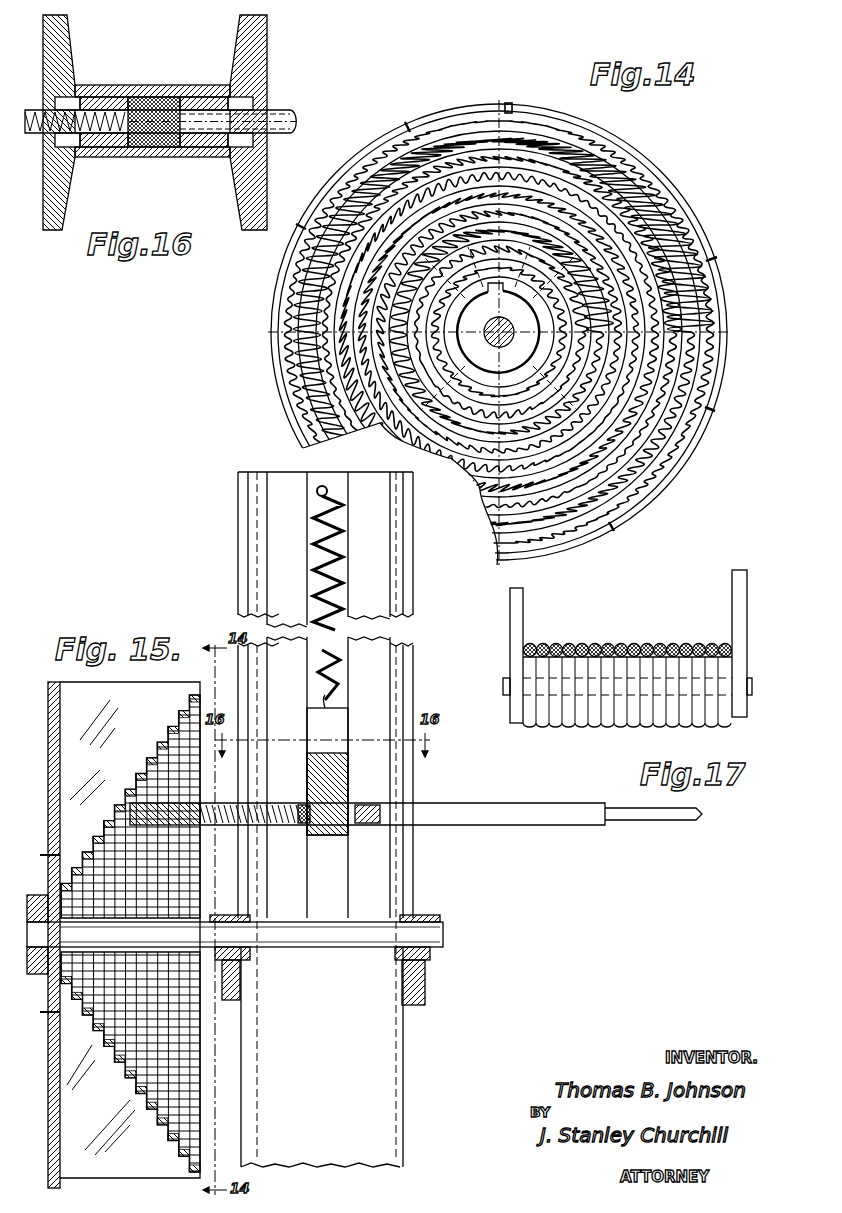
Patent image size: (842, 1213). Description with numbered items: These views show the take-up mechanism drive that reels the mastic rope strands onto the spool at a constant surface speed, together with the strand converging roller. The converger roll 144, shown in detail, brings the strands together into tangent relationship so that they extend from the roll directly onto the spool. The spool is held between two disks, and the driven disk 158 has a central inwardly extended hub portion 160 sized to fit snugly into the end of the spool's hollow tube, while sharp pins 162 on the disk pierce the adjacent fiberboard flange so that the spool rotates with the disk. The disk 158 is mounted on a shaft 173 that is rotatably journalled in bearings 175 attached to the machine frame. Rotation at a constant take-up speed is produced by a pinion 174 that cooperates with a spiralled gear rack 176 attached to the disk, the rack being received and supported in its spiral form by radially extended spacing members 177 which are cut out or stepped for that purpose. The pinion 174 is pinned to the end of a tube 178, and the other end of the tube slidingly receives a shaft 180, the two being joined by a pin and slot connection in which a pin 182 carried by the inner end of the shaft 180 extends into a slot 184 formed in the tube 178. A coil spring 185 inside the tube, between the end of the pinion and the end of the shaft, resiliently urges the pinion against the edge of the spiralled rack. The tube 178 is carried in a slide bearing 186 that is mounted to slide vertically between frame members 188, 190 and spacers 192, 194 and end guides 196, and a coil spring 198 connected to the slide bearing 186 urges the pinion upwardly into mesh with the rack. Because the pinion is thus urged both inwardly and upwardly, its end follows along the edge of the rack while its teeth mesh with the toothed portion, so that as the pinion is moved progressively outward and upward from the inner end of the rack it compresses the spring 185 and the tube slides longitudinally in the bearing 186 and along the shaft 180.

In FIG. 17, the converger roll 144 is at (555, 725).
In FIG. 14, the disk 158 is at (658, 182).
In FIG. 15, the disk 158 is at (50, 690).
In FIG. 15, the hub portion 160 is at (33, 897).
In FIG. 15, the sharp pins 162 is at (52, 855).
In FIG. 14, the shaft 173 is at (498, 328).
In FIG. 15, the shaft 173 is at (305, 947).
In FIG. 15, the pinion 174 is at (135, 800).
In FIG. 15, the bearings 175 is at (243, 998).
In FIG. 14, the spiralled gear rack 176 is at (509, 103).
In FIG. 15, the spiralled gear rack 176 is at (112, 835).
In FIG. 14, the spacing members 177 is at (410, 130).
In FIG. 15, the spacing members 177 is at (130, 684).
In FIG. 15, the tube 178 is at (455, 803).
In FIG. 15, the shaft 180 is at (500, 822).
In FIG. 15, the pin 182 is at (368, 805).
In FIG. 15, the slot 184 is at (300, 828).
In FIG. 15, the coil spring 185 is at (300, 810).
In FIG. 16, the slide bearing 186 is at (165, 97).
In FIG. 15, the slide bearing 186 is at (348, 712).
In FIG. 16, the frame member 188 is at (145, 87).
In FIG. 15, the frame member 188 is at (245, 492).
In FIG. 16, the frame member 190 is at (145, 157).
In FIG. 16, the spacer 192 is at (108, 98).
In FIG. 15, the spacer 192 is at (275, 482).
In FIG. 16, the spacer 194 is at (100, 147).
In FIG. 16, the end guides 196 is at (70, 22).
In FIG. 15, the end guides 196 is at (238, 532).
In FIG. 15, the coil spring 198 is at (345, 540).